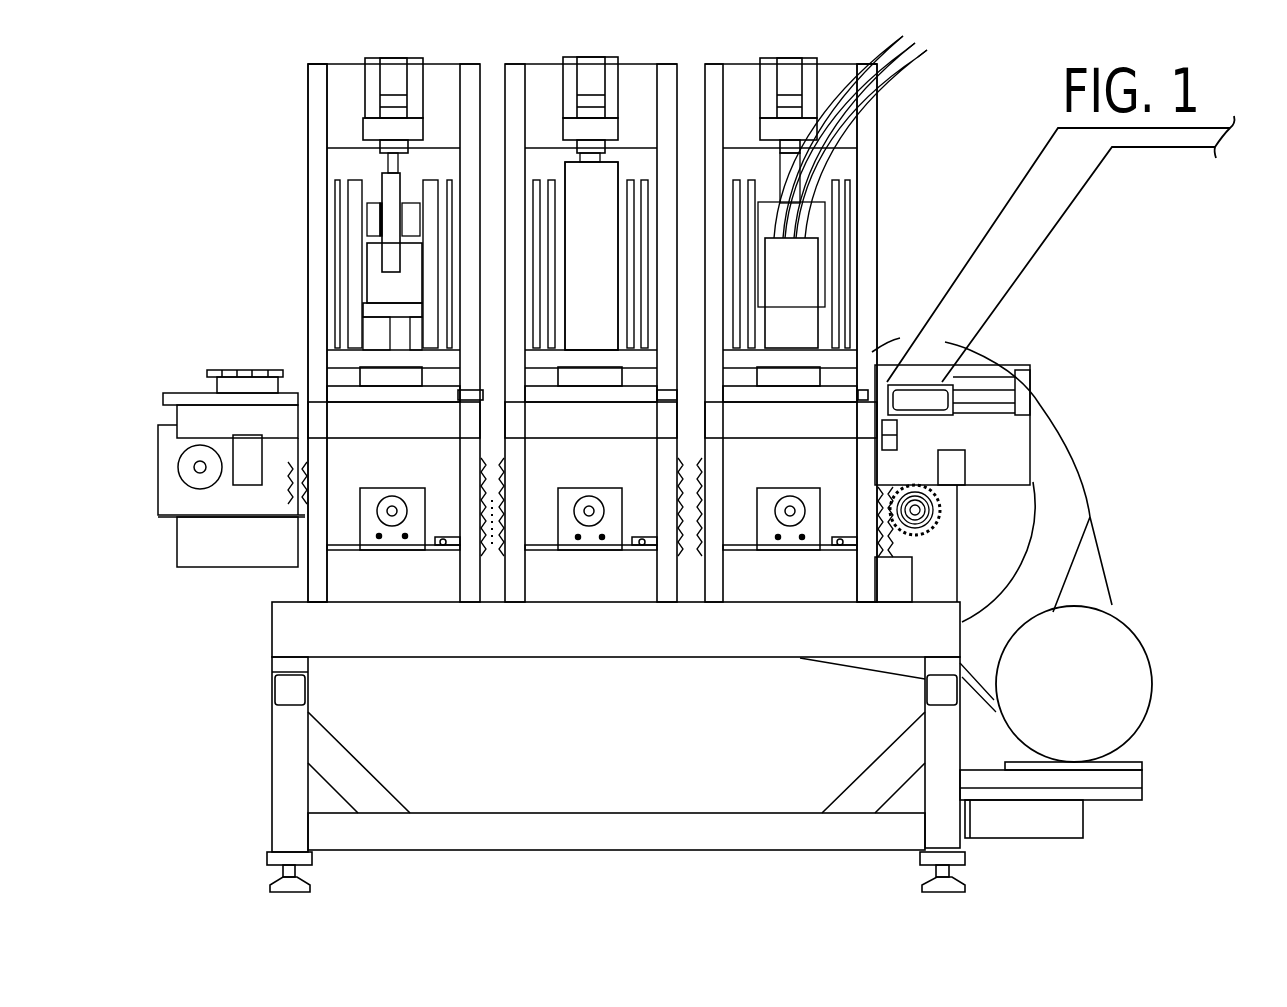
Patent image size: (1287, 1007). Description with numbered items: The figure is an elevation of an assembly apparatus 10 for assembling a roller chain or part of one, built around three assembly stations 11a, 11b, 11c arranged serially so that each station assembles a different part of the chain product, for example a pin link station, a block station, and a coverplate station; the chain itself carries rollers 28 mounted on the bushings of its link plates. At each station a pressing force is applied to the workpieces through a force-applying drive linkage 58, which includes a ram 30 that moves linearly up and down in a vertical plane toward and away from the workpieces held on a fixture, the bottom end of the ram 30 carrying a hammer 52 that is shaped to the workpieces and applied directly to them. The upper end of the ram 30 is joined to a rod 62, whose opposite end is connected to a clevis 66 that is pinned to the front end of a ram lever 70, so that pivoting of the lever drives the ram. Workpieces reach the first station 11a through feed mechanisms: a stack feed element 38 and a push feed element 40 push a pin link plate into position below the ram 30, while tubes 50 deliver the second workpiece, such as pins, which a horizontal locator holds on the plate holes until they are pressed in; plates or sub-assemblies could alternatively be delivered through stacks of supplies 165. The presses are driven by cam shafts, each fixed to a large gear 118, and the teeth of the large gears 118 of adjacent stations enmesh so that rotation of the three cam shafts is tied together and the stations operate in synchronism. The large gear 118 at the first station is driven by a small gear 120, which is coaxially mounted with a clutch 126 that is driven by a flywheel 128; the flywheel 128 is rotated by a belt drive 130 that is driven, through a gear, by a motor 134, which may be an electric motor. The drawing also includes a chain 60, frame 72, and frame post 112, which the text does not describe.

The assembly apparatus 10 is at (300, 141).
The first assembly station 11a is at (833, 83).
The second assembly station 11b is at (635, 130).
The third assembly station 11c is at (317, 172).
The rollers 28 is at (375, 247).
The ram 30 is at (375, 277).
The stack feed element 38 is at (1027, 243).
The push feed element 40 is at (1022, 370).
The tubes 50 is at (905, 70).
The hammer 52 is at (390, 323).
The drive linkage 58 is at (417, 66).
The drive chain 60 is at (490, 557).
The rod 62 is at (390, 192).
The clevis 66 is at (418, 105).
The ram lever 70 is at (385, 83).
The frame 72 is at (338, 100).
The frame post 112 is at (868, 178).
The large gear 118 is at (302, 493).
The small gear 120 is at (935, 527).
The clutch 126 is at (1010, 562).
The flywheel 128 is at (1065, 483).
The belt drive 130 is at (1110, 590).
The motor 134 is at (1137, 680).
The stacks of supplies 165 is at (422, 323).